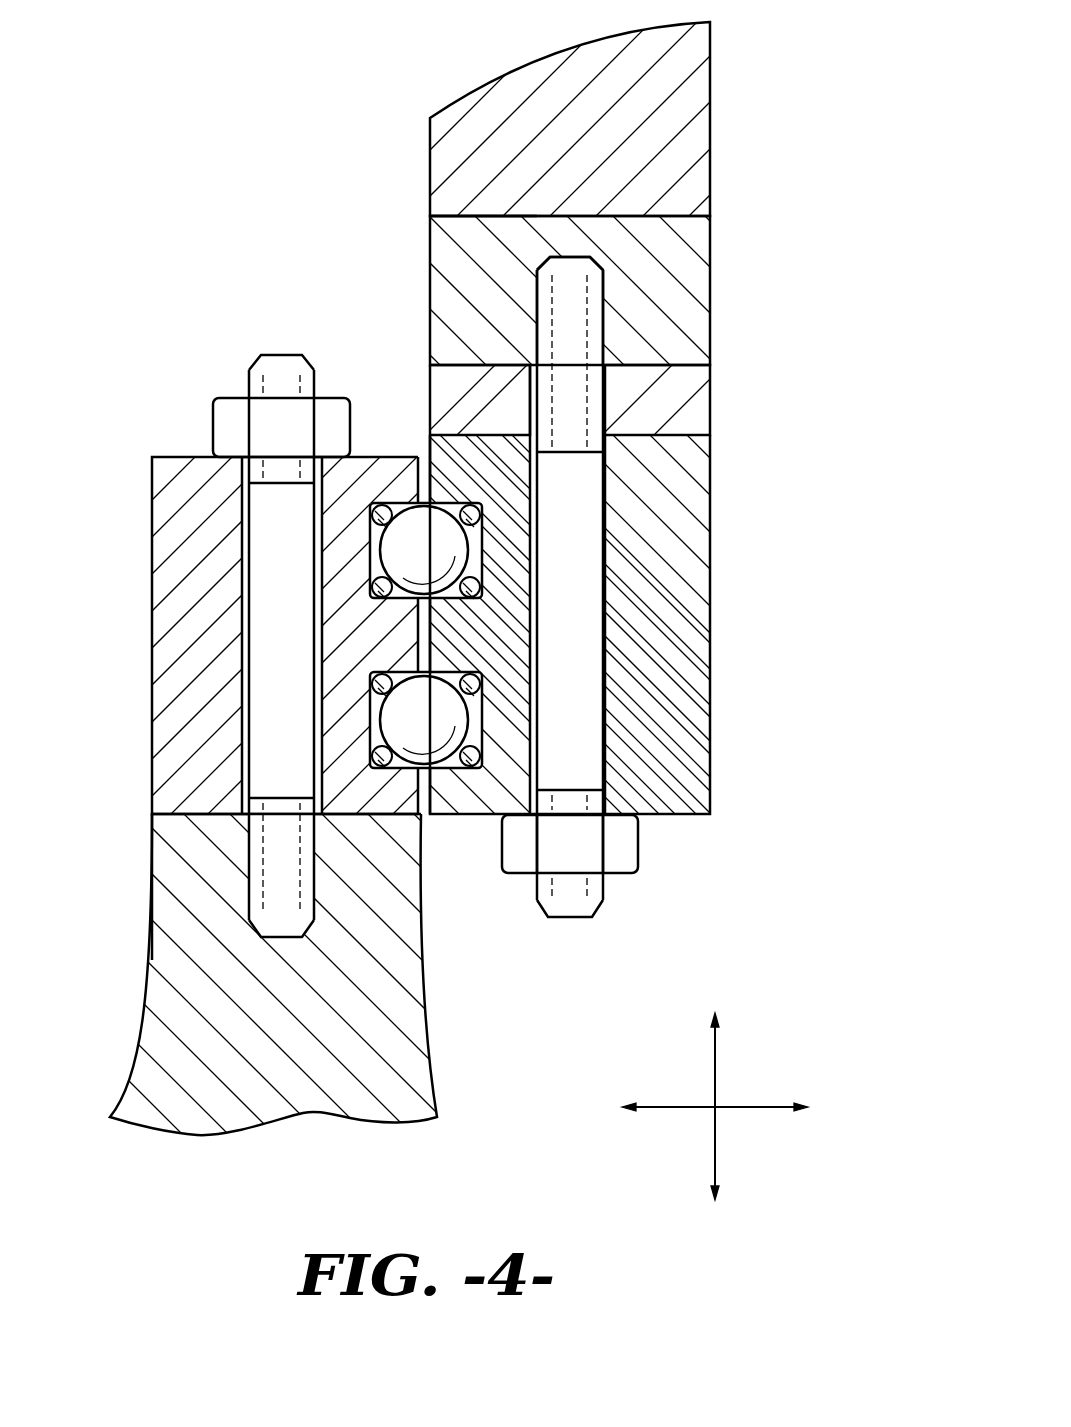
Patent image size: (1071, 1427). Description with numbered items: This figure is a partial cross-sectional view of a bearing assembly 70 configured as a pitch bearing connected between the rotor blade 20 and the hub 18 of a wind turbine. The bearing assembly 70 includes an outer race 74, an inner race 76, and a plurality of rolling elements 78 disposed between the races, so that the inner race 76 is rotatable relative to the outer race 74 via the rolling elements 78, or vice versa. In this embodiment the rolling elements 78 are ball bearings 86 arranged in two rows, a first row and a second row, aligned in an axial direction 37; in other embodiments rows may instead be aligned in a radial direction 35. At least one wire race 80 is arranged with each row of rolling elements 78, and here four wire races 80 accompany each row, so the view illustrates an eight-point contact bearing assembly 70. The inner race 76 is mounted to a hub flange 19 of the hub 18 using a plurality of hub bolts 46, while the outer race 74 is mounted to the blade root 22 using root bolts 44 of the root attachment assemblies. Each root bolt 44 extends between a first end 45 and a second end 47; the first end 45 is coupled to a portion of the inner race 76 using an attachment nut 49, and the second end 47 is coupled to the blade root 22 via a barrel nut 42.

The hub 18 is at (143, 987).
The hub flange 19 is at (150, 910).
The rotor blade 20 is at (714, 130).
The blade root 22 is at (714, 250).
The radial direction 35 is at (746, 1108).
The axial direction 37 is at (716, 1068).
The barrel nut 42 is at (476, 215).
The root bolt 44 is at (585, 612).
The first end 45 is at (567, 890).
The hub bolt 46 is at (267, 710).
The second end 47 is at (575, 298).
The attachment nut 49 is at (228, 415).
The bearing assembly 70 is at (782, 434).
The outer race 74 is at (152, 493).
The inner race 76 is at (712, 551).
The rolling elements 78 is at (424, 503).
The wire race 80 is at (372, 547).
The ball bearings 86 is at (441, 712).